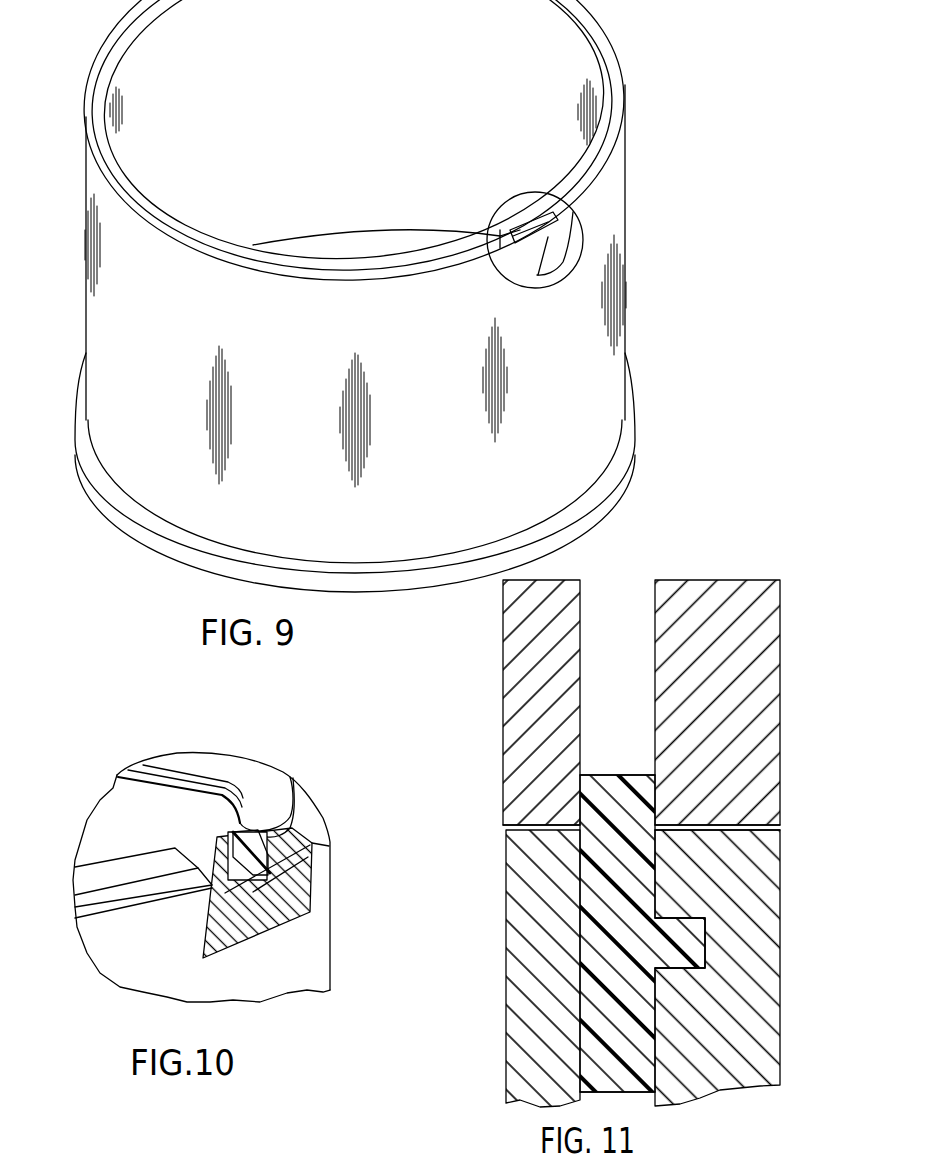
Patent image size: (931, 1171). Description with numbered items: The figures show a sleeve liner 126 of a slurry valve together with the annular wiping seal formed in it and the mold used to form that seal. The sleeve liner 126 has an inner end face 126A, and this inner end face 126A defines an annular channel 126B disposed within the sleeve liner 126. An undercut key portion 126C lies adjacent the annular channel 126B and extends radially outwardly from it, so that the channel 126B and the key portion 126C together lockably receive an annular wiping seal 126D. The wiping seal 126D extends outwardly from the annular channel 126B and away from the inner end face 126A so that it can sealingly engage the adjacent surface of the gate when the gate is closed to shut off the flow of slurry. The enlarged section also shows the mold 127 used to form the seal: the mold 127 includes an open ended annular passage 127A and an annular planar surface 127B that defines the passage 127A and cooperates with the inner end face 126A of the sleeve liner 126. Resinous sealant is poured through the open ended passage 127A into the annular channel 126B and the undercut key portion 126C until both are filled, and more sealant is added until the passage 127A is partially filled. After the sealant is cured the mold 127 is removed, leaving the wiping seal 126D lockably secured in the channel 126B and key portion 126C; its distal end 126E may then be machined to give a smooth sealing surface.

In FIG. 9, the sleeve liner 126 is at (585, 397).
In FIG. 11, the sleeve liner 126 is at (750, 1077).
In FIG. 10, the inner end face 126A is at (302, 812).
In FIG. 11, the inner end face 126A is at (745, 838).
In FIG. 10, the annular channel 126B is at (213, 850).
In FIG. 11, the annular channel 126B is at (582, 943).
In FIG. 9, the undercut key portion 126C is at (548, 230).
In FIG. 10, the undercut key portion 126C is at (290, 863).
In FIG. 11, the undercut key portion 126C is at (690, 917).
In FIG. 9, the annular wiping seal 126D is at (621, 86).
In FIG. 10, the annular wiping seal 126D is at (293, 918).
In FIG. 11, the annular wiping seal 126D is at (640, 1040).
In FIG. 10, the distal end 126E is at (243, 773).
In FIG. 11, the distal end 126E is at (641, 736).
In FIG. 11, the mold 127 is at (760, 693).
In FIG. 11, the open ended annular passage 127A is at (582, 610).
In FIG. 11, the annular planar surface 127B is at (527, 823).